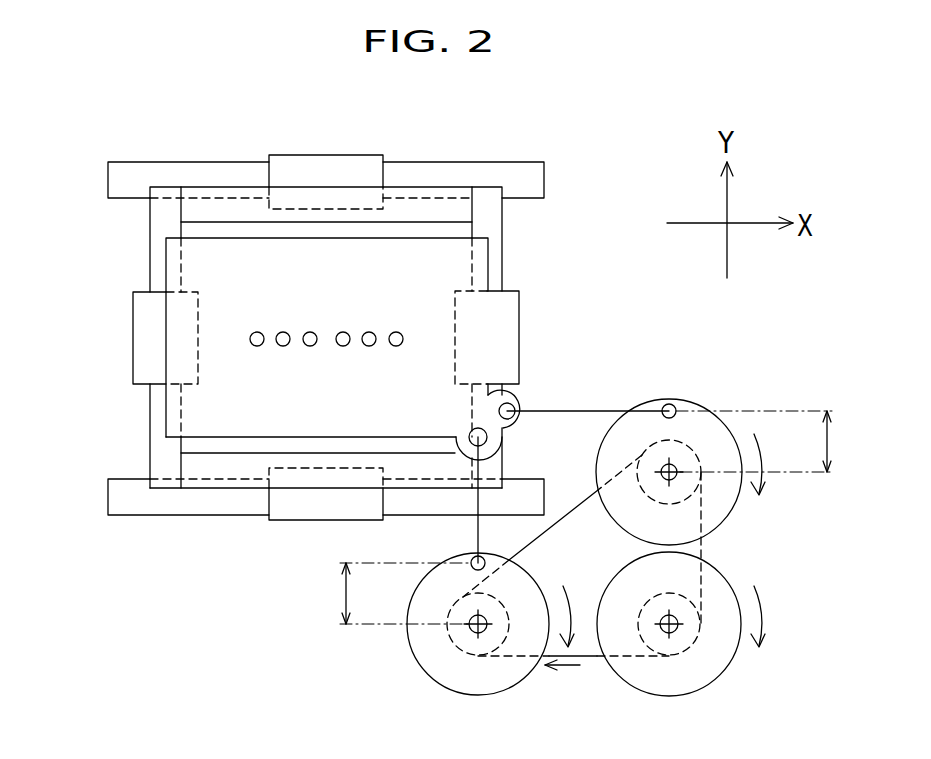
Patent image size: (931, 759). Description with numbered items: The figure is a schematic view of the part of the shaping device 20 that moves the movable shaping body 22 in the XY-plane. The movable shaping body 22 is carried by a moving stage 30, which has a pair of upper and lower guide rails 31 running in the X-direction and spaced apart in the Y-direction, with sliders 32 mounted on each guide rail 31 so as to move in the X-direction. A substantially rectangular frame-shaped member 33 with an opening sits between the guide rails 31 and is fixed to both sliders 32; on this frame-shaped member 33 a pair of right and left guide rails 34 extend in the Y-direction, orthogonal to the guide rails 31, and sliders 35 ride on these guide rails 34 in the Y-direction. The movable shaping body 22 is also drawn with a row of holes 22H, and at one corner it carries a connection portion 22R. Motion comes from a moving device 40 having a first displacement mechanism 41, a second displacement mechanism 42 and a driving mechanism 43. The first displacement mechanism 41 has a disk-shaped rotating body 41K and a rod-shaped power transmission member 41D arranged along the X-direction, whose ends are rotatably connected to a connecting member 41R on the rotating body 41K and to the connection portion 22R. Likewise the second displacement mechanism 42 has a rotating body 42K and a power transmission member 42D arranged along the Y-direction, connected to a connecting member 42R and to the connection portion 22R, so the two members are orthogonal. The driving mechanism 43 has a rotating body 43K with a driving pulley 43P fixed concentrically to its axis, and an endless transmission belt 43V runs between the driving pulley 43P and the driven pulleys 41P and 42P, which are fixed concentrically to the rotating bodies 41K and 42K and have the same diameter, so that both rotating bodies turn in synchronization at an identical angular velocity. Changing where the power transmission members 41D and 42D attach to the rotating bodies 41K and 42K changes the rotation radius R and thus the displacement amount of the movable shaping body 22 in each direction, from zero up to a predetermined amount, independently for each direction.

The shaping device 20 is at (590, 192).
The movable shaping body 22 is at (205, 268).
The suction holes 22H is at (250, 339).
The connection portion 22R is at (517, 400).
The moving stage 30 is at (106, 160).
The guide rails 31 is at (222, 168).
The sliders 32 is at (306, 163).
The frame-shaped member 33 is at (433, 198).
The guide rails 34 is at (498, 260).
The sliders 35 is at (512, 305).
The moving device 40 is at (310, 617).
The first displacement mechanism 41 is at (703, 401).
The power transmission member 41D is at (613, 410).
The rotating body 41K is at (730, 500).
The driven pulley 41P is at (687, 450).
The connecting member 41R is at (667, 402).
The second displacement mechanism 42 is at (413, 663).
The power transmission member 42D is at (478, 527).
The rotating body 42K is at (437, 677).
The driven pulley 42P is at (450, 637).
The connecting member 42R is at (473, 561).
The driving mechanism 43 is at (742, 648).
The rotating body 43K is at (718, 582).
The driving pulley 43P is at (690, 642).
The transmission belt 43V is at (597, 658).